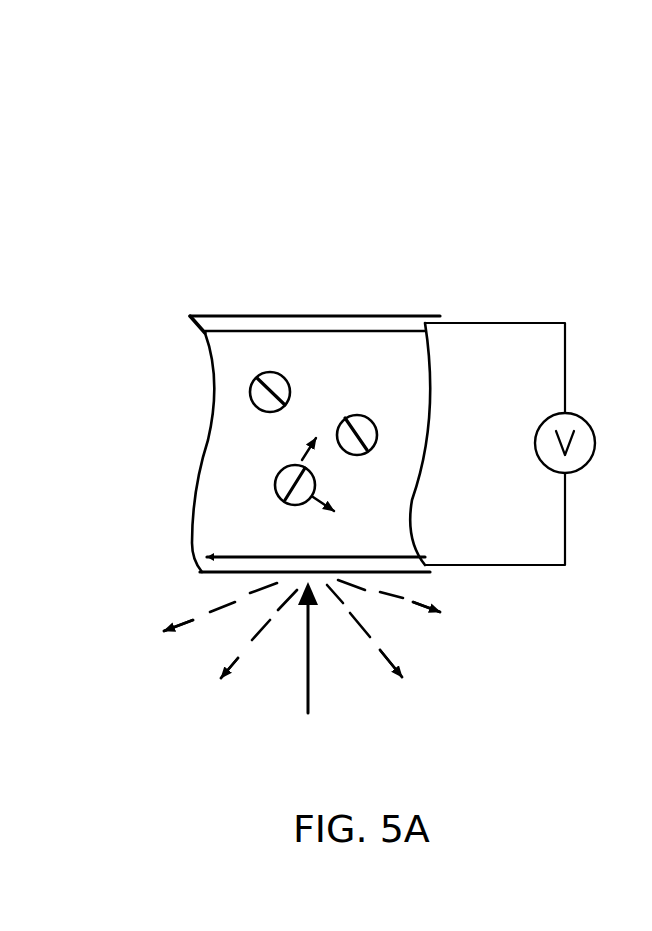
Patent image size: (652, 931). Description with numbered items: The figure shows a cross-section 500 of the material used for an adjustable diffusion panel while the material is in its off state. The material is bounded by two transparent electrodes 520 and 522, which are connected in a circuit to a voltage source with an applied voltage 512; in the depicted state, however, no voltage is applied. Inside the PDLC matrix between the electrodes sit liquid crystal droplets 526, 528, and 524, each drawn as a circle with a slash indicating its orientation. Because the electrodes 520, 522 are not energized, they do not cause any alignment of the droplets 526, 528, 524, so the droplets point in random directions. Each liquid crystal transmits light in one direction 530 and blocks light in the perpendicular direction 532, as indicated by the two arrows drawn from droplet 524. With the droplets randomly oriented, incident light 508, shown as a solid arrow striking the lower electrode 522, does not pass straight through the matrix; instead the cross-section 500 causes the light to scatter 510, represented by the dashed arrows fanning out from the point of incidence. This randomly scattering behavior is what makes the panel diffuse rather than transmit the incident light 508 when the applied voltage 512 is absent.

The cross-section 500 is at (514, 210).
The incident light 508 is at (313, 677).
The scatter 510 is at (270, 620).
The applied voltage 512 is at (590, 465).
The transparent electrode 520 is at (217, 330).
The transparent electrode 522 is at (227, 563).
The liquid crystal droplet 524 is at (275, 484).
The liquid crystal droplet 526 is at (243, 394).
The liquid crystal droplet 528 is at (363, 411).
The transmitting direction 530 is at (300, 447).
The blocking direction 532 is at (325, 508).